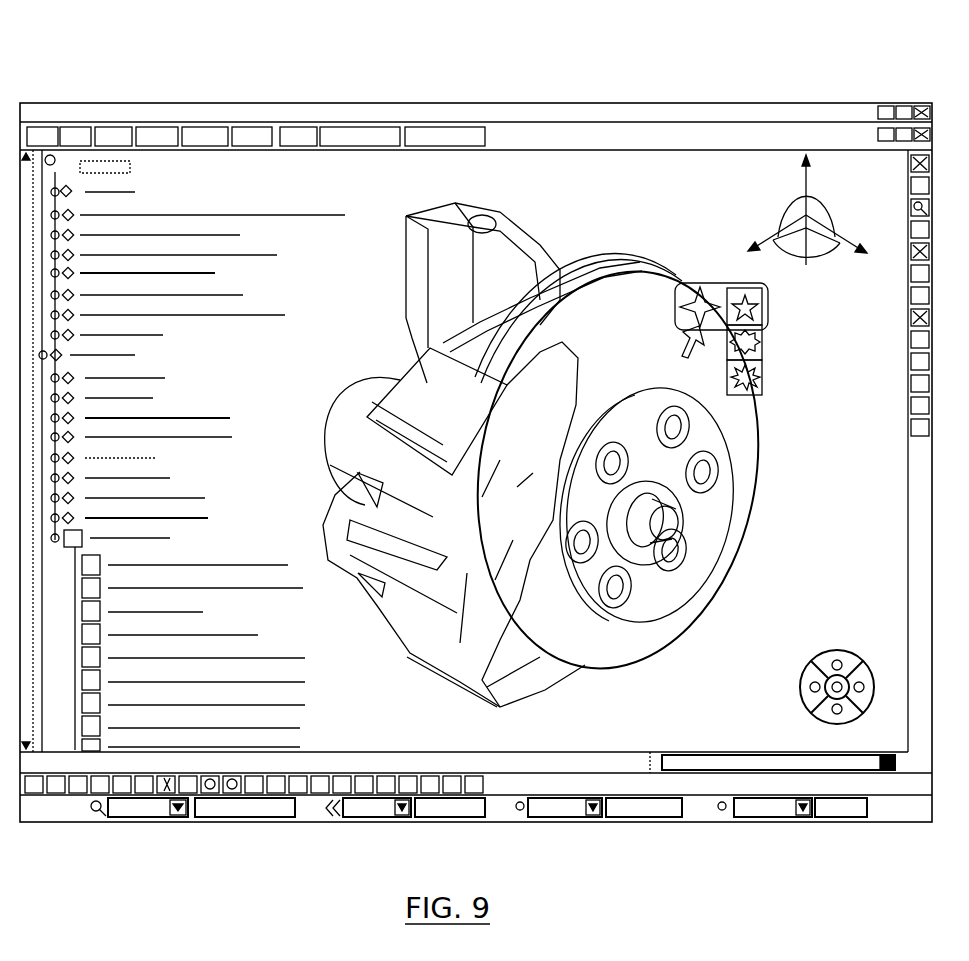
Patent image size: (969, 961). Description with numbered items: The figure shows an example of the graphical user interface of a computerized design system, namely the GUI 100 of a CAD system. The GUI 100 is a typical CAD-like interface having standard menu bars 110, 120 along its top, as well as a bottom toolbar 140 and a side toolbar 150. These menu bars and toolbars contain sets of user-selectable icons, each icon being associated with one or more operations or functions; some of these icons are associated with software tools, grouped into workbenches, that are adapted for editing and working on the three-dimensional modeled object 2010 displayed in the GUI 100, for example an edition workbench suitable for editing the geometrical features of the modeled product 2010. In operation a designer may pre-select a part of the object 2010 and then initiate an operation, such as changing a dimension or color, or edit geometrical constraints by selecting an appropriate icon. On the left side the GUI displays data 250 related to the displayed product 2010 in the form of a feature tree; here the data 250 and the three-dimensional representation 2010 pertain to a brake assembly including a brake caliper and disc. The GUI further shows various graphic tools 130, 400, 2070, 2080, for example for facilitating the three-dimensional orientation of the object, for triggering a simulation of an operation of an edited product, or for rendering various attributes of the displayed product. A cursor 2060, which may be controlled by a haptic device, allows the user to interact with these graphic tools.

The GUI 100 is at (740, 674).
The menu bar 110 is at (584, 105).
The menu bar 120 is at (676, 140).
The graphic tool 130 is at (818, 264).
The bottom toolbar 140 is at (490, 752).
The side toolbar 150 is at (912, 438).
The data 250 is at (150, 430).
The graphic tool 400 is at (830, 650).
The 3D modeled object 2010 is at (432, 384).
The cursor 2060 is at (710, 333).
The graphic tool 2070 is at (697, 290).
The graphic tool 2080 is at (770, 350).